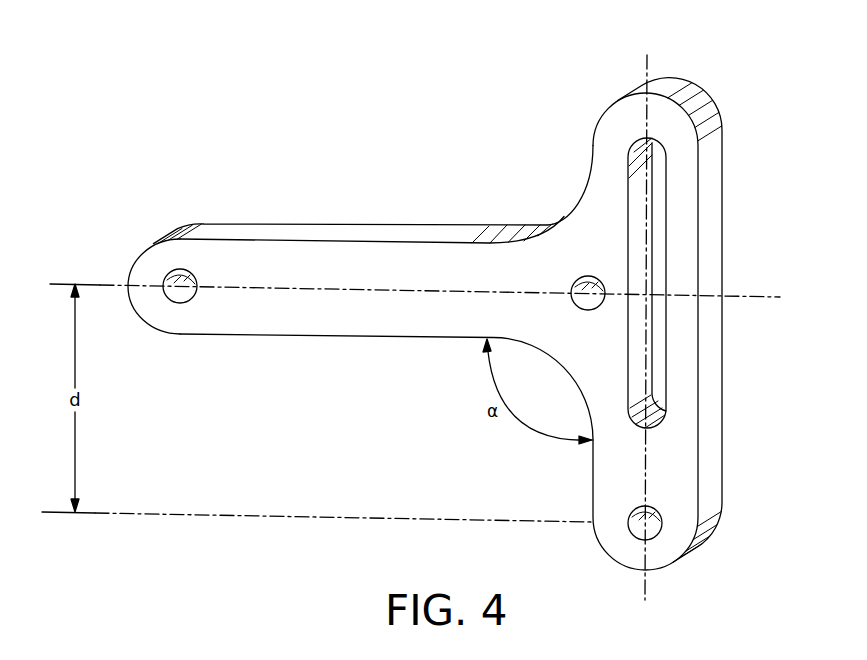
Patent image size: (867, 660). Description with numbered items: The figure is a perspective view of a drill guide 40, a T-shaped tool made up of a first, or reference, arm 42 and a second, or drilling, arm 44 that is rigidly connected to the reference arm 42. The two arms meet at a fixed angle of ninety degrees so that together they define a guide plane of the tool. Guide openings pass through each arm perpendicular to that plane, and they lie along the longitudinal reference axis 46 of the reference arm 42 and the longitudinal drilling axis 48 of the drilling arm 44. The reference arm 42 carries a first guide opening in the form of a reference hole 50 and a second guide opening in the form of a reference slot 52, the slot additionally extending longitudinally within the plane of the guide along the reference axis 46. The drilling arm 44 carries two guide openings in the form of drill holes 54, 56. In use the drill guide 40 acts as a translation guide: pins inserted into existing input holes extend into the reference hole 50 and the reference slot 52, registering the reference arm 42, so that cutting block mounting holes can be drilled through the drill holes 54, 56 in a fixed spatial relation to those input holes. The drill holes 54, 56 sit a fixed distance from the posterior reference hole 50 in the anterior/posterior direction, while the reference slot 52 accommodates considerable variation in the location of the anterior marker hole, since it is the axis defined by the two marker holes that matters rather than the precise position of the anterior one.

The drill guide 40 is at (760, 125).
The reference arm 42 is at (708, 449).
The drilling arm 44 is at (317, 325).
The longitudinal reference axis 46 is at (647, 316).
The longitudinal drilling axis 48 is at (432, 296).
The reference hole 50 is at (628, 530).
The reference slot 52 is at (658, 199).
The drill hole 54 is at (583, 275).
The drill hole 56 is at (182, 272).